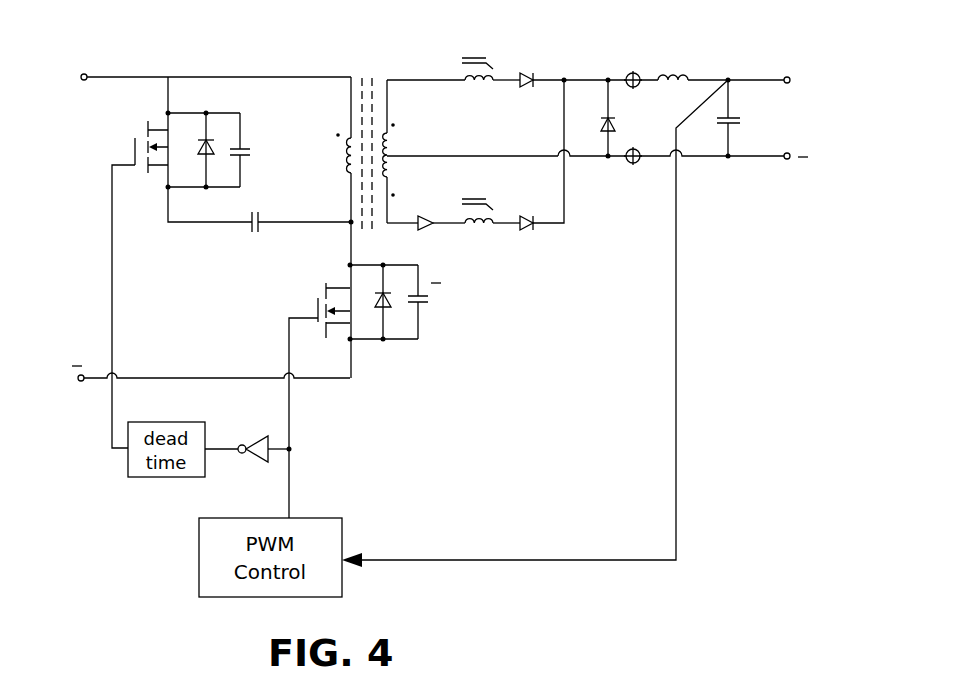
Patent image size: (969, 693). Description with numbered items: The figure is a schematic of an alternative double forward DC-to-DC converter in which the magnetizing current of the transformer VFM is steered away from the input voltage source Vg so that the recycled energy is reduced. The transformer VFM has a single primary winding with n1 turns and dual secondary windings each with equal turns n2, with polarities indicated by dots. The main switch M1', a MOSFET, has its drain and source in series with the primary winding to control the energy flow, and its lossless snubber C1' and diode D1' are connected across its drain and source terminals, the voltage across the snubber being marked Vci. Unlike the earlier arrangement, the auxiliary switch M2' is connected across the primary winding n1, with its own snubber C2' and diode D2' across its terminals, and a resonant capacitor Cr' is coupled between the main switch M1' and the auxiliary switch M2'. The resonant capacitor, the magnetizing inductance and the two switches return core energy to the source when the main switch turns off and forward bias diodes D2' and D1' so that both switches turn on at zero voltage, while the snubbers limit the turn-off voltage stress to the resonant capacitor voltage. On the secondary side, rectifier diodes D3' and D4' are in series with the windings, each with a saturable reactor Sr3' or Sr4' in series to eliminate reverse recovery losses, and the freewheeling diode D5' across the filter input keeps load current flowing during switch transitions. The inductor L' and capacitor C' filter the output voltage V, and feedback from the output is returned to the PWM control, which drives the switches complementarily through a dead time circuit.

The input voltage Vg is at (204, 227).
The auxiliary switch M2' is at (140, 284).
The diode D2' is at (204, 137).
The lossless snubber C2' is at (245, 136).
The resonant capacitor Cr' is at (299, 236).
The transformer VFM is at (362, 143).
The primary winding turns n1 is at (328, 171).
The secondary winding turns n2 is at (470, 151).
The saturable reactor Sr3' is at (480, 54).
The rectifier diode D3' is at (542, 67).
The saturable reactor Sr4' is at (480, 232).
The rectifier diode D4' is at (539, 240).
The freewheeling diode D5' is at (626, 118).
The filter inductor L' is at (673, 64).
The filter capacitor C' is at (741, 118).
The output voltage V is at (793, 116).
The main switch M1' is at (319, 397).
The diode D1' is at (384, 319).
The lossless snubber C1' is at (428, 320).
The snubber capacitor voltage Vci is at (452, 308).